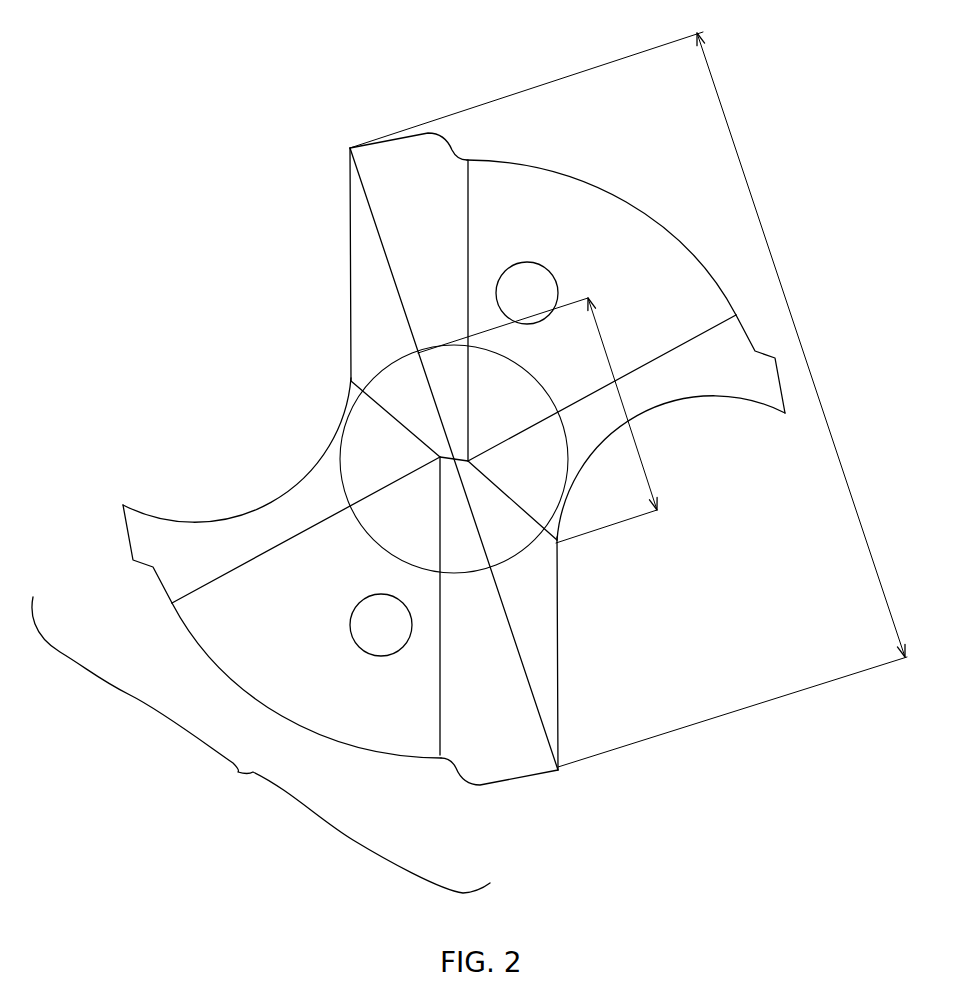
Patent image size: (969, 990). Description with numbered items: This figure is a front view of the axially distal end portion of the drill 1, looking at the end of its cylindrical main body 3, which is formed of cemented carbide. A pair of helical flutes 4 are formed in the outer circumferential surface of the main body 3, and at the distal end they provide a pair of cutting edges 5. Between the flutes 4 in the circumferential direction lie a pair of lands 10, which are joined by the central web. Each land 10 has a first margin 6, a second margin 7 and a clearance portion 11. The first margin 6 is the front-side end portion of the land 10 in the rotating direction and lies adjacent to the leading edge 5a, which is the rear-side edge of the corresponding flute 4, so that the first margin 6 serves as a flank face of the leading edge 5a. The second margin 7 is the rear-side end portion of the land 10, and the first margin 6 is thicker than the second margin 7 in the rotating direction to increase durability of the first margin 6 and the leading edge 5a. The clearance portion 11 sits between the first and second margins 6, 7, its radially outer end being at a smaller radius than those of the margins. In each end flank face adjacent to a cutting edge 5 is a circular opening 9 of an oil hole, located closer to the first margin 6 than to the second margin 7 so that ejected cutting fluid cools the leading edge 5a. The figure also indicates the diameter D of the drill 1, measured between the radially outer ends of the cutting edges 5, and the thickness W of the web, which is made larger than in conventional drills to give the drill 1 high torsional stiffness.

The drill 1 is at (748, 577).
The main body 3 is at (673, 542).
The helical flute 4 is at (583, 460).
The cutting edge 5 is at (350, 170).
The leading edge 5a is at (349, 146).
The first margin 6 is at (388, 138).
The second margin 7 is at (788, 392).
The opening 9 is at (548, 285).
The land 10 is at (261, 745).
The clearance portion 11 is at (640, 207).
The diameter of the drill D is at (748, 185).
The thickness of the web W is at (603, 348).